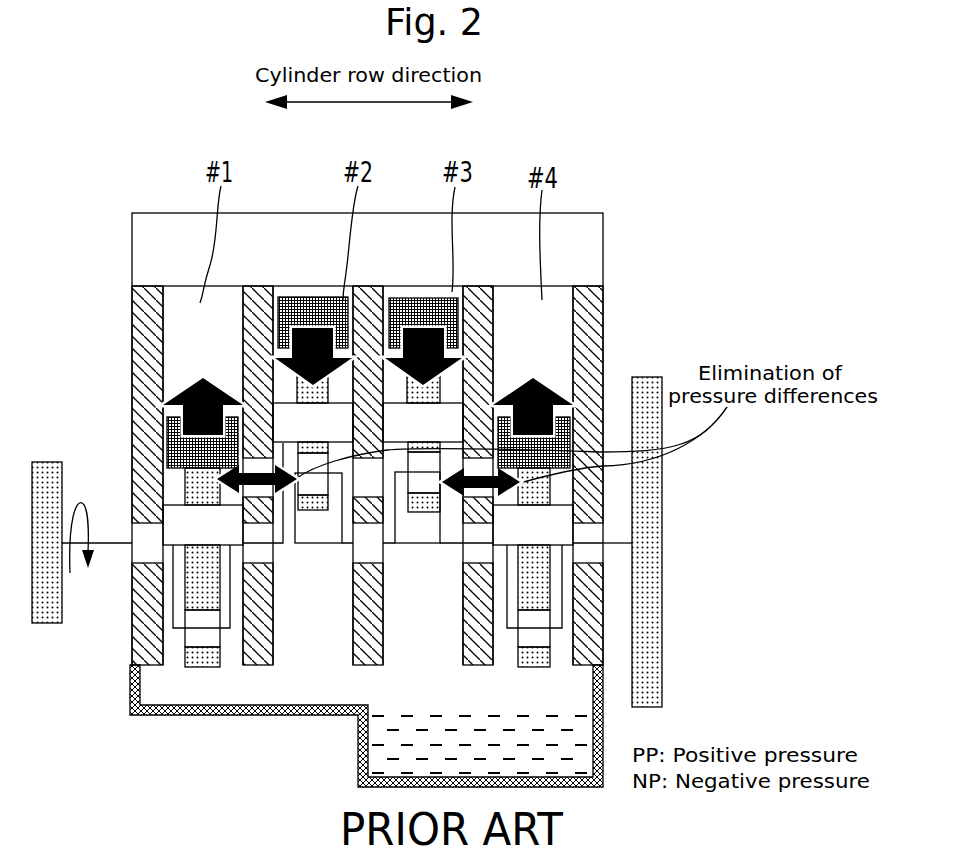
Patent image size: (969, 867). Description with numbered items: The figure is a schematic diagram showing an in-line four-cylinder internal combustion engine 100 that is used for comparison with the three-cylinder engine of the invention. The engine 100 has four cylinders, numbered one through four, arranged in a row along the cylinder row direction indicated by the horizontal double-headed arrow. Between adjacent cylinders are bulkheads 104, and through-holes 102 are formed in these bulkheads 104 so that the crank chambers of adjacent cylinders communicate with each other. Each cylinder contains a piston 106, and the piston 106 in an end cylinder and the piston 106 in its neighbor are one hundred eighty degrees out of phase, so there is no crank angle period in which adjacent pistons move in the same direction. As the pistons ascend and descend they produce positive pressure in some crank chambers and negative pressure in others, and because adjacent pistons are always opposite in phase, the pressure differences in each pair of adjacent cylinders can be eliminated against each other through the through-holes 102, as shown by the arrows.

The in-line four-cylinder internal combustion engine 100 is at (694, 212).
The through-hole 102 is at (327, 640).
The bulkhead 104 is at (365, 433).
The piston 106 is at (313, 312).